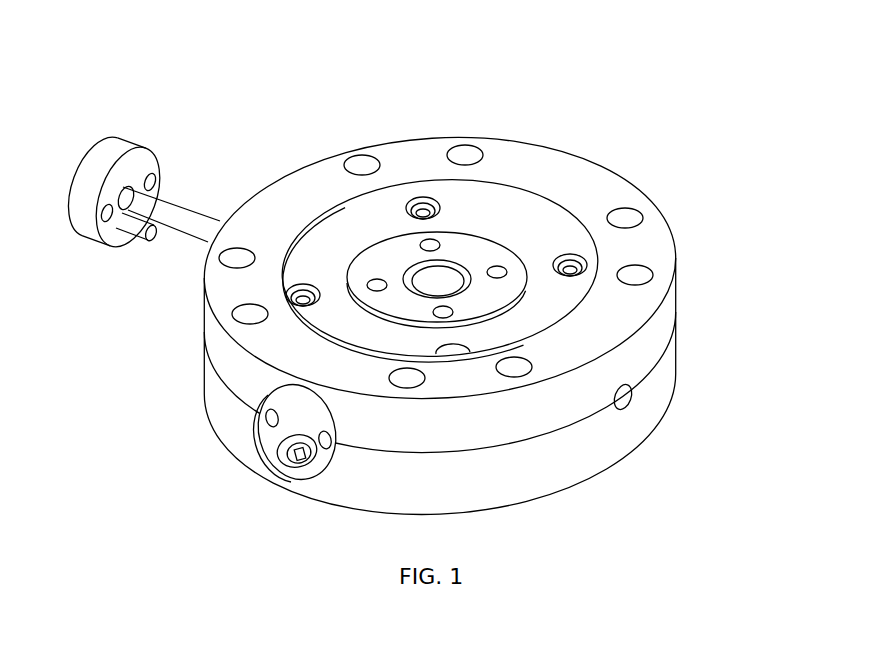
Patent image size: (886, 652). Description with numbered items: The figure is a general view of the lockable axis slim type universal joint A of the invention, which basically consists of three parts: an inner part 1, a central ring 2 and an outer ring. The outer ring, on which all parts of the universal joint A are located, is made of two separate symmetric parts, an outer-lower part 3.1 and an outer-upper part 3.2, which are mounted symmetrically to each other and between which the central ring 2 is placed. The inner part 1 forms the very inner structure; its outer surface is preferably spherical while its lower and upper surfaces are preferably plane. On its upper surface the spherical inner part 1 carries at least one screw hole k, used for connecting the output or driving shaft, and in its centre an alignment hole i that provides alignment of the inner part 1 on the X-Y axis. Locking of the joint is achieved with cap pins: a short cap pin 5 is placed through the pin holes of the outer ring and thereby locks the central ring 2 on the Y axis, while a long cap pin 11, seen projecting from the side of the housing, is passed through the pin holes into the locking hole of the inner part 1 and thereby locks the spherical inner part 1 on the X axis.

The lockable axis slim type universal joint A is at (632, 77).
The inner part 1 is at (495, 190).
The central ring 2 is at (504, 207).
The outer-lower part 3.1 is at (614, 445).
The outer-upper part 3.2 is at (453, 262).
The short cap pin- 5 is at (272, 435).
The long cap pin- 11 is at (124, 167).
The alignment hole i is at (443, 274).
The screw hole k is at (638, 209).